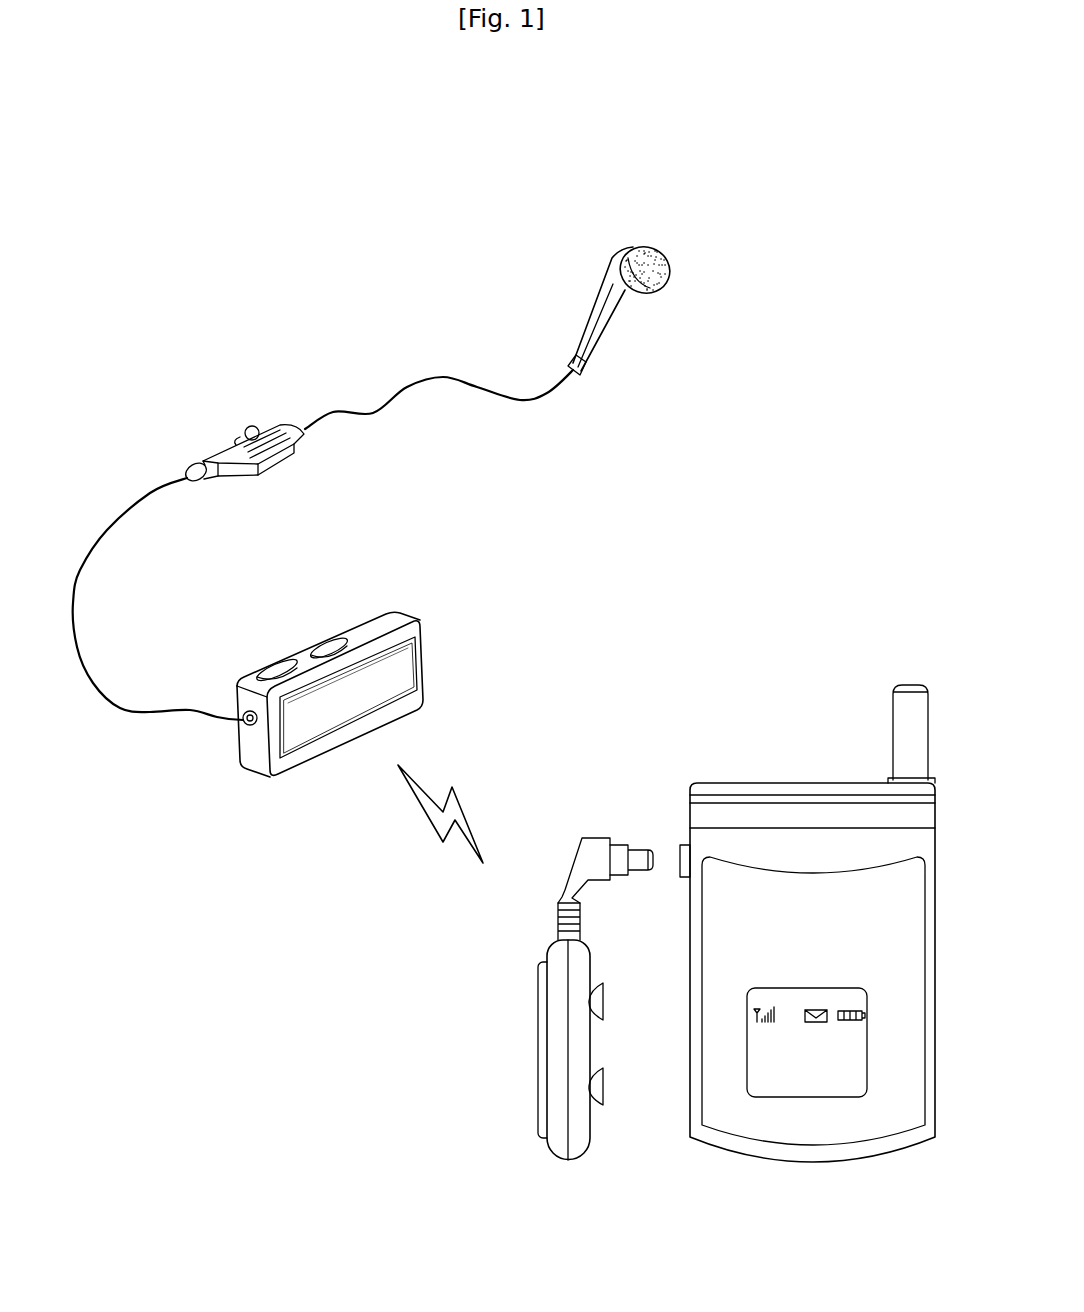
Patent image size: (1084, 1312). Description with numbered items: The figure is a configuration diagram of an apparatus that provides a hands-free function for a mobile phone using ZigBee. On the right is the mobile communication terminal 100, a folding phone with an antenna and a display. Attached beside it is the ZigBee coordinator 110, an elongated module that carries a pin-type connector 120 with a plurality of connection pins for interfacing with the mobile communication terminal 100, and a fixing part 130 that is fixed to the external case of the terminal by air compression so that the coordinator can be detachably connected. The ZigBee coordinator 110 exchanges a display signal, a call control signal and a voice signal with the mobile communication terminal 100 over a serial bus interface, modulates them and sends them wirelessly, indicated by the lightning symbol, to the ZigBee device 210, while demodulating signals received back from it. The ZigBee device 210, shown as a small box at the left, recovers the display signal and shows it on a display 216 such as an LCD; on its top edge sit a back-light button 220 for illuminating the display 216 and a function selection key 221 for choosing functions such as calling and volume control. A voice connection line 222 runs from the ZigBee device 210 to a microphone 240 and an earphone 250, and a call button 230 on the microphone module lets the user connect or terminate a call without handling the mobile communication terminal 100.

The mobile communication terminal 100 is at (762, 817).
The ZigBee coordinator 110 is at (537, 1063).
The pin-type connector 120 is at (637, 858).
The fixing part 130 is at (602, 1020).
The ZigBee device 210 is at (408, 618).
The display 216 is at (313, 727).
The back-light button 220 is at (326, 642).
The function selection key 221 is at (268, 668).
The voice connection line 222 is at (128, 712).
The call button 230 is at (250, 427).
The microphone 240 is at (293, 450).
The earphone 250 is at (655, 295).